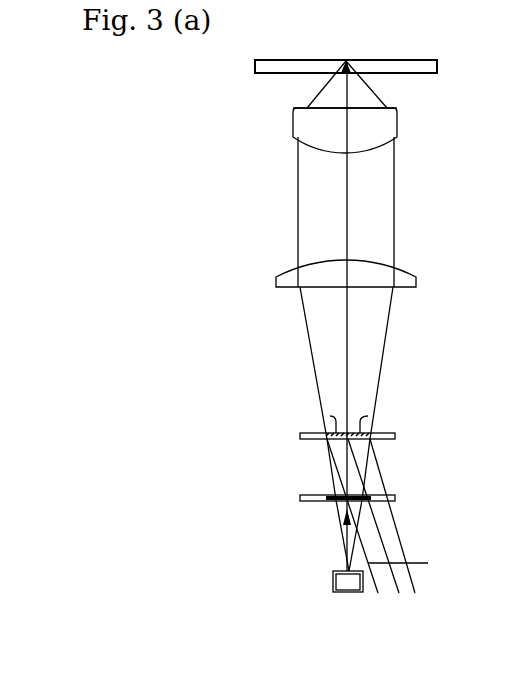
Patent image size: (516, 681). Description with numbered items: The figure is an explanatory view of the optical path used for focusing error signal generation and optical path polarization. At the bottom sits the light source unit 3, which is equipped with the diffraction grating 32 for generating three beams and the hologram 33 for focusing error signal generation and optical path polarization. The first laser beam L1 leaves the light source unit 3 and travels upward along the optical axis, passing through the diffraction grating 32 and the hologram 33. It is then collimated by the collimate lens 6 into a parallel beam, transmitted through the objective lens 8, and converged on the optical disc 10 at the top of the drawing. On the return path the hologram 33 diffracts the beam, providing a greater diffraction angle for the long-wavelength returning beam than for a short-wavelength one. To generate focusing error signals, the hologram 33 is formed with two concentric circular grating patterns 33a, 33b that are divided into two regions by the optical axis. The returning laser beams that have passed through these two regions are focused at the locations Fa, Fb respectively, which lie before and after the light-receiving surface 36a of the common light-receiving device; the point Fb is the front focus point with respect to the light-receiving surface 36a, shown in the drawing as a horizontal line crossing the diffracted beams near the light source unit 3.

The optical disc 10 is at (437, 66).
The objective lens 8 is at (399, 117).
The collimate lens 6 is at (417, 273).
The hologram 33 is at (396, 436).
The concentric circular grating pattern 33a is at (330, 416).
The concentric circular grating pattern 33b is at (368, 416).
The diffraction grating 32 is at (396, 498).
The first laser beam L1 is at (342, 537).
The light-receiving surface 36a is at (428, 563).
The light source unit 3 is at (333, 592).
The focus location Fa is at (377, 549).
The front focus point Fb is at (405, 568).